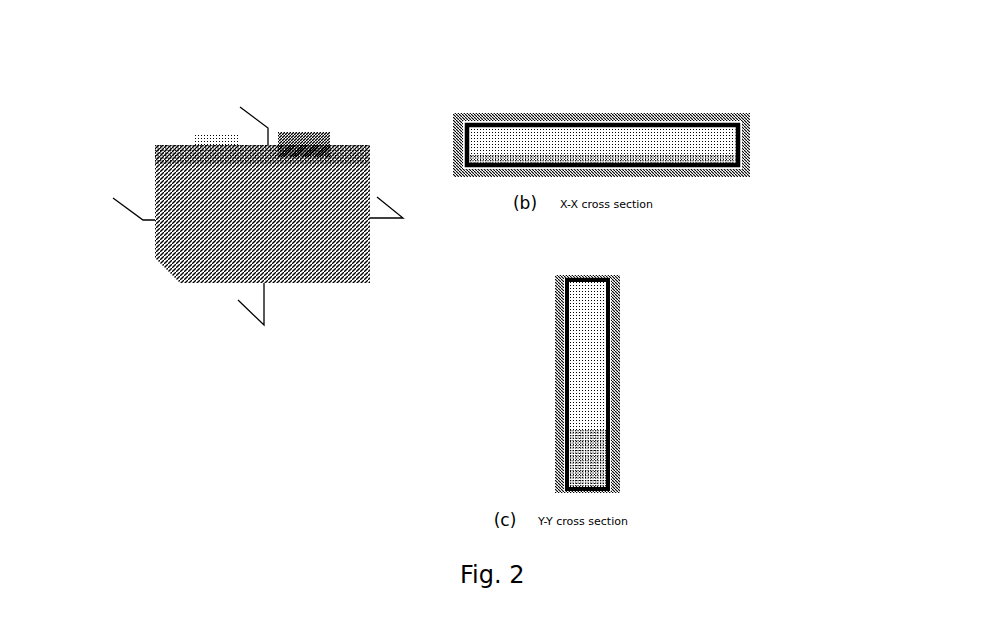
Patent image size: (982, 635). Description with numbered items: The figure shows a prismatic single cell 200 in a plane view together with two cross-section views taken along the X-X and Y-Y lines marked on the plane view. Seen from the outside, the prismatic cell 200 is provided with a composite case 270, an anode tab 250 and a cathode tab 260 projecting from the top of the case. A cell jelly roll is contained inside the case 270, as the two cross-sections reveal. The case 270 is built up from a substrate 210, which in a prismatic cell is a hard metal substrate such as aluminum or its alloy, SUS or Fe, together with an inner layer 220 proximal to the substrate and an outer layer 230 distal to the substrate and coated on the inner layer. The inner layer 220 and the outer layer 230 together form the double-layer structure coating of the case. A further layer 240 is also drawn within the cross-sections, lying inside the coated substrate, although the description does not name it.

The prismatic cell 200 is at (229, 210).
The substrate 210 is at (665, 112).
The inner layer 220 is at (750, 130).
The outer layer 230 is at (717, 158).
The bottom layer 240 is at (722, 163).
The anode tab 250 is at (213, 135).
The cathode tab 260 is at (303, 133).
The composite case 270 is at (155, 172).